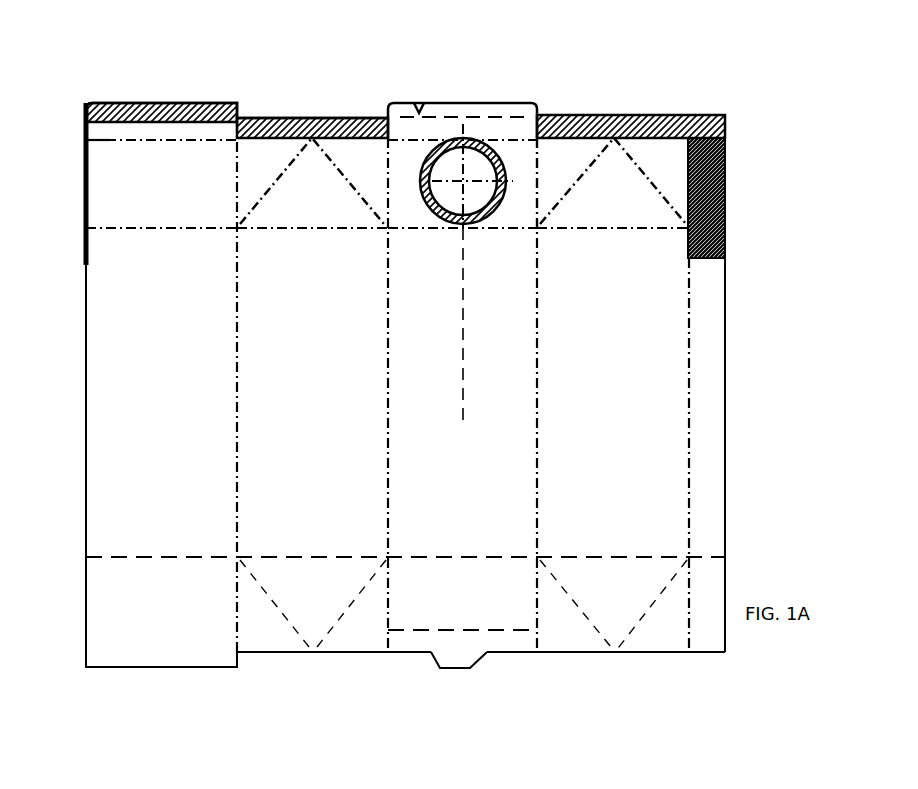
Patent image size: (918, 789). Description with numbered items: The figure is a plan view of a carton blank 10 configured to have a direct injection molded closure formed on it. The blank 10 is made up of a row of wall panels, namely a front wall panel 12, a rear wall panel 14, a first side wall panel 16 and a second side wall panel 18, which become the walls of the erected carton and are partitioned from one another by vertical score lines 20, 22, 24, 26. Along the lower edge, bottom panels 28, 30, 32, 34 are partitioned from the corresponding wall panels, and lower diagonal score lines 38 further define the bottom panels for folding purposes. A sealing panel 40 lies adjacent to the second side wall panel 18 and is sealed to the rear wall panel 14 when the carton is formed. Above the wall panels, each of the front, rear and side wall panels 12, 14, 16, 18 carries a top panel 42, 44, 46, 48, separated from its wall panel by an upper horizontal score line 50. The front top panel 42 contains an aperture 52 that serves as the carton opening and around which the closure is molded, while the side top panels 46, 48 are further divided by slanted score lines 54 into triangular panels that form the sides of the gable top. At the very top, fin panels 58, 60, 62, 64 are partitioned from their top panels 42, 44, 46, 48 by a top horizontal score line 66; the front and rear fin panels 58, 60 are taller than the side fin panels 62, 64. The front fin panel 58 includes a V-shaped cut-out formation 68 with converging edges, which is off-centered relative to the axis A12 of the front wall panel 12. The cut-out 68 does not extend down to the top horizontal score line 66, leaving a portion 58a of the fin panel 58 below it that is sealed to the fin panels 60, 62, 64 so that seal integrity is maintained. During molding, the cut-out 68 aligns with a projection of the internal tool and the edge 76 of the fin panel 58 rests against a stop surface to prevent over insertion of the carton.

The carton blank 10 is at (767, 176).
The front wall panel 12 is at (451, 412).
The rear wall panel 14 is at (148, 430).
The first side wall panel 16 is at (303, 422).
The second side wall panel 18 is at (606, 422).
The vertical score line 20 is at (236, 506).
The vertical score line 22 is at (387, 508).
The vertical score line 24 is at (530, 512).
The vertical score line 26 is at (685, 504).
The bottom panel 28 is at (506, 615).
The bottom panel 30 is at (272, 640).
The bottom panel 32 is at (197, 647).
The bottom panel 34 is at (115, 557).
The lower diagonal score line 38 is at (338, 615).
The sealing panel 40 is at (714, 375).
The front top panel 42 is at (543, 150).
The rear top panel 44 is at (178, 158).
The side top panel 46 is at (311, 135).
The side top panel 48 is at (637, 114).
The upper horizontal score line 50 is at (638, 236).
The aperture 52 is at (468, 230).
The slanted score line 54 is at (276, 172).
The fin panel 58 is at (402, 97).
The portion of fin panel 58a is at (495, 127).
The fin panel 60 is at (105, 104).
The fin panel 62 is at (291, 120).
The fin panel 64 is at (606, 167).
The top horizontal score line 66 is at (110, 143).
The cut-out formation 68 is at (425, 92).
The edge of fin panel 76 is at (504, 100).
The panel axis A12 is at (462, 248).